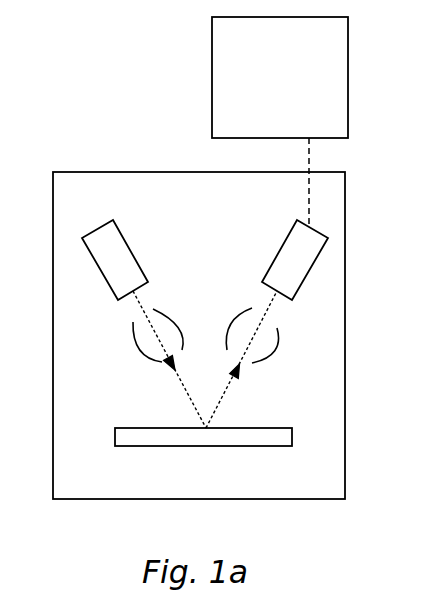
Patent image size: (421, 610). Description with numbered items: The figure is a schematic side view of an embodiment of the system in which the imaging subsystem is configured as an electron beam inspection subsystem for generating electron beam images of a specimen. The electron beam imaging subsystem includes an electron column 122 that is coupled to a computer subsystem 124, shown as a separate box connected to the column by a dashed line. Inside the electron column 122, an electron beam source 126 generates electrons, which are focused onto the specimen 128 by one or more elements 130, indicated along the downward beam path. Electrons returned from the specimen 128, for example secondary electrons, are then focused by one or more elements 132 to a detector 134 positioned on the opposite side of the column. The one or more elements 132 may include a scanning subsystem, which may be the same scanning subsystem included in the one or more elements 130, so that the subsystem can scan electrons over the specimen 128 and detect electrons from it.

The electron column 122 is at (187, 172).
The computer subsystem 124 is at (260, 114).
The electron beam source 126 is at (122, 229).
The specimen 128 is at (248, 428).
The one or more elements 130 is at (143, 350).
The one or more elements 132 is at (274, 350).
The detector 134 is at (290, 234).